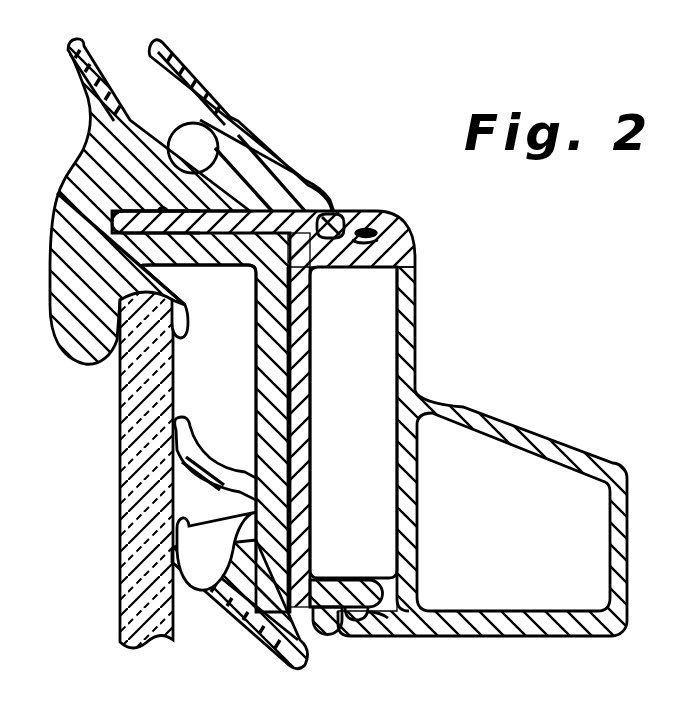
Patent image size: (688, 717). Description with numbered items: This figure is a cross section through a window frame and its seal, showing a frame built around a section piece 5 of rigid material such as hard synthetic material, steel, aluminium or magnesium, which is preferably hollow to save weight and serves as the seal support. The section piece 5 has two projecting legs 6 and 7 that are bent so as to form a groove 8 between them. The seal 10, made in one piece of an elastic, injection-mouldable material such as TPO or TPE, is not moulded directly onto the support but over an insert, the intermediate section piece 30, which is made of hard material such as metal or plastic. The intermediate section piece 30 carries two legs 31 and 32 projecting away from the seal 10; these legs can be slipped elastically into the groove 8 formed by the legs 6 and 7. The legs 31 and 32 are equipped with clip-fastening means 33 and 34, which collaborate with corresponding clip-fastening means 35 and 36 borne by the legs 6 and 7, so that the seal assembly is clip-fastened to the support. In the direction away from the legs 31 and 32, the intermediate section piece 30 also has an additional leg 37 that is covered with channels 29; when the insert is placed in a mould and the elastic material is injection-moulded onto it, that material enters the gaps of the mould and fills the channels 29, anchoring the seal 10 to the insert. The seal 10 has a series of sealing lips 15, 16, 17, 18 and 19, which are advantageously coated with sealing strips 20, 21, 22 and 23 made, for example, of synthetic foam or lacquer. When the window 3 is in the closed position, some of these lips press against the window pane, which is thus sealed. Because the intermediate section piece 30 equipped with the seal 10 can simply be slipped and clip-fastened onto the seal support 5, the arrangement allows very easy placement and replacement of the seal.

The sealing strip 22 is at (88, 48).
The sealing strip 23 is at (190, 58).
The sealing lip 18 is at (86, 78).
The sealing lip 19 is at (192, 86).
The channel 29 is at (163, 207).
The additional leg 37 is at (240, 207).
The projecting leg 6 is at (340, 220).
The clip-fastening means 35 is at (368, 230).
The clip-fastening means 33 is at (376, 237).
The leg 31 is at (347, 262).
The groove 8 is at (400, 328).
The intermediate section piece 30 is at (305, 370).
The seal 10 is at (262, 400).
The sealing lip 17 is at (190, 300).
The window 3 is at (126, 482).
The sealing lip 16 is at (207, 458).
The sealing strip 21 is at (202, 478).
The sealing lip 15 is at (195, 548).
The sealing strip 20 is at (238, 625).
The leg 32 is at (340, 587).
The clip-fastening means 34 is at (351, 618).
The clip-fastening means 36 is at (357, 620).
The projecting leg 7 is at (372, 625).
The section piece 5 is at (500, 428).